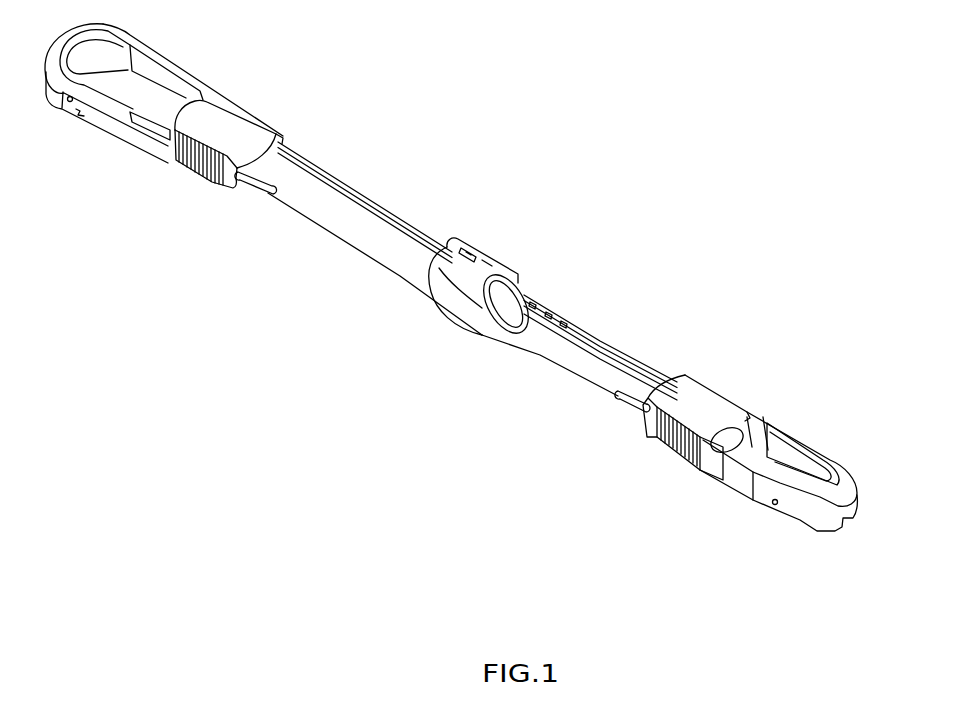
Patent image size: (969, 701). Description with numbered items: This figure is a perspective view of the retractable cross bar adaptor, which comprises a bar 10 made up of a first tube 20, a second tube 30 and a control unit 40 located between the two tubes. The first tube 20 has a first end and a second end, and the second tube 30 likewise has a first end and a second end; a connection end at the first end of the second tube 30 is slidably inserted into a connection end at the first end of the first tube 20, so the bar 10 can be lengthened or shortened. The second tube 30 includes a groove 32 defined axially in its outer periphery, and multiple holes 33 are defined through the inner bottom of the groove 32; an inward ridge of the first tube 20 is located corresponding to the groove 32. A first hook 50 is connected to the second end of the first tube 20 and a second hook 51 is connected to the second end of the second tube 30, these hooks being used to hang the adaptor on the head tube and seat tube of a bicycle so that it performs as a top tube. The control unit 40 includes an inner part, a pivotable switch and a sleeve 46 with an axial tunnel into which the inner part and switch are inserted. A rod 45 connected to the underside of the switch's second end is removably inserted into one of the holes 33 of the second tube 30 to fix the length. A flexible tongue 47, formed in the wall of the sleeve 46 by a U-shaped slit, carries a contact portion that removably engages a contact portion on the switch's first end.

The bar 10 is at (451, 304).
The first tube 20 is at (537, 271).
The second tube 30 is at (566, 393).
The groove 32 is at (642, 355).
The holes 33 is at (571, 327).
The control unit 40 is at (448, 344).
The rod 45 is at (516, 292).
The sleeve 46 is at (452, 300).
The tongue 47 is at (460, 252).
The first hook 50 is at (110, 124).
The second hook 51 is at (740, 485).